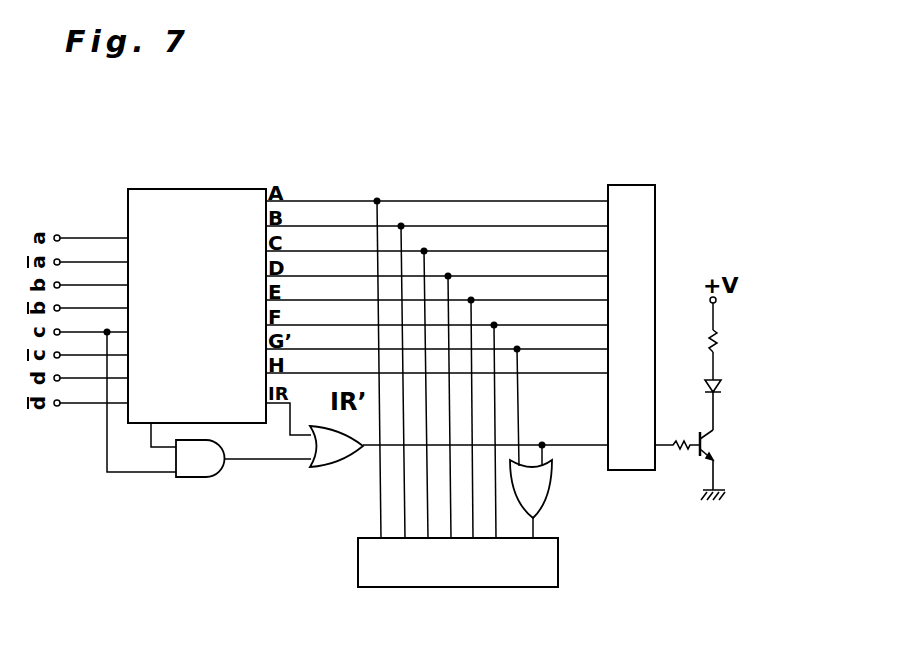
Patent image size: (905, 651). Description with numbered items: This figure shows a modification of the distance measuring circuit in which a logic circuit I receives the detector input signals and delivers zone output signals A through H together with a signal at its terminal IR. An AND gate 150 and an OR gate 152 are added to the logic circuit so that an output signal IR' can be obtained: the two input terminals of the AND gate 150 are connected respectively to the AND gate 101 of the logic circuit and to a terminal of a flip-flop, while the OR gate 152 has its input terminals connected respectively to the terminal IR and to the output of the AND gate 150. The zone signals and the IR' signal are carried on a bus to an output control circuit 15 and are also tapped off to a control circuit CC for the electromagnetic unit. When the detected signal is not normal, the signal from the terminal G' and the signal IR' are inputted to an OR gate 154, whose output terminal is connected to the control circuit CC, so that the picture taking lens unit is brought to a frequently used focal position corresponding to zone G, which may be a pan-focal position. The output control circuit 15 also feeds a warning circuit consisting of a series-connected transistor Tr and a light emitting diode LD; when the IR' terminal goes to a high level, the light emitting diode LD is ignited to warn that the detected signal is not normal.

The logic circuit I is at (192, 196).
The AND gate 101 is at (197, 306).
The output control circuit 15 is at (641, 192).
The AND gate 150 is at (196, 470).
The OR gate 152 is at (326, 460).
The OR gate 154 is at (534, 493).
The control circuit CC is at (556, 565).
The light emitting diode LD is at (723, 388).
The transistor Tr is at (713, 453).